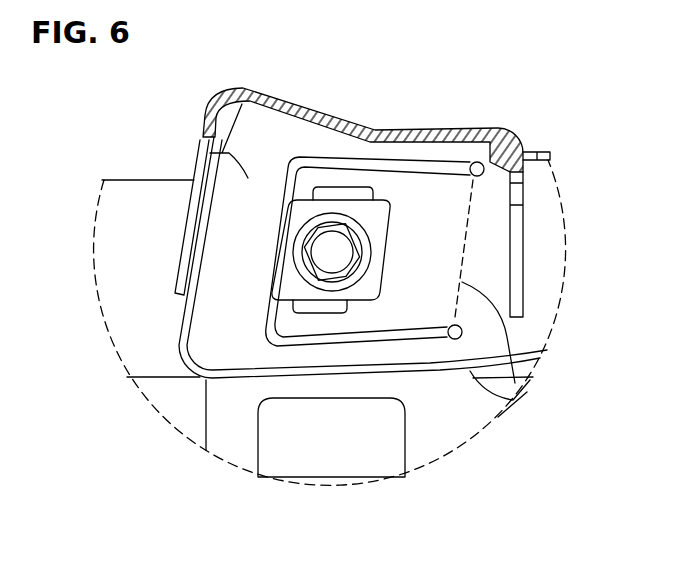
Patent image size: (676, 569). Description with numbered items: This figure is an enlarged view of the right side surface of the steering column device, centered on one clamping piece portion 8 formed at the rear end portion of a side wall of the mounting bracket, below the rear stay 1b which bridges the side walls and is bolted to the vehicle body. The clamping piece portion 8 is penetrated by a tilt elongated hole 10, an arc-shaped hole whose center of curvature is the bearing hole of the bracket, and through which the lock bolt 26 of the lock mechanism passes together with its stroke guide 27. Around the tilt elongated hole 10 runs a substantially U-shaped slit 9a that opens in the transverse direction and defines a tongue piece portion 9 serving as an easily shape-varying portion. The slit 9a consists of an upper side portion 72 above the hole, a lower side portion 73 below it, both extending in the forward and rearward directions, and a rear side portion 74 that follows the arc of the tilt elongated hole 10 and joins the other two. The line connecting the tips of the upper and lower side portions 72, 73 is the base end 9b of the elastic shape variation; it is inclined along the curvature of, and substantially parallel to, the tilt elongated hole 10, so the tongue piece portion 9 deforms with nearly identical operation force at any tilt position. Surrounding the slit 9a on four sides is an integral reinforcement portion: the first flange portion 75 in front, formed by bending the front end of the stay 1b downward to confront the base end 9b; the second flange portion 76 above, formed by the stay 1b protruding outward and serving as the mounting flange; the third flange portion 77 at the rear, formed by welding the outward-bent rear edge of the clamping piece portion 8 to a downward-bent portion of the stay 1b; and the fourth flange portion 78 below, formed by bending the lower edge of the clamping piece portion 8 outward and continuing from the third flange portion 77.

The stay 1b is at (333, 117).
The clamping piece portion 8 is at (220, 103).
The second flange portion 76 is at (457, 127).
The first flange portion 75 is at (513, 240).
The third flange portion 77 is at (197, 163).
The lock bolt 26 is at (292, 290).
The rear side portion 74 is at (283, 207).
The upper side portion 72 is at (377, 167).
The lower side portion 73 is at (333, 337).
The tilt elongated hole 10 is at (312, 312).
The stroke guide 27 is at (318, 250).
The tongue piece portion 9 is at (400, 310).
The slit 9a is at (405, 141).
The base end 9b is at (527, 392).
The fourth flange portion 78 is at (440, 370).